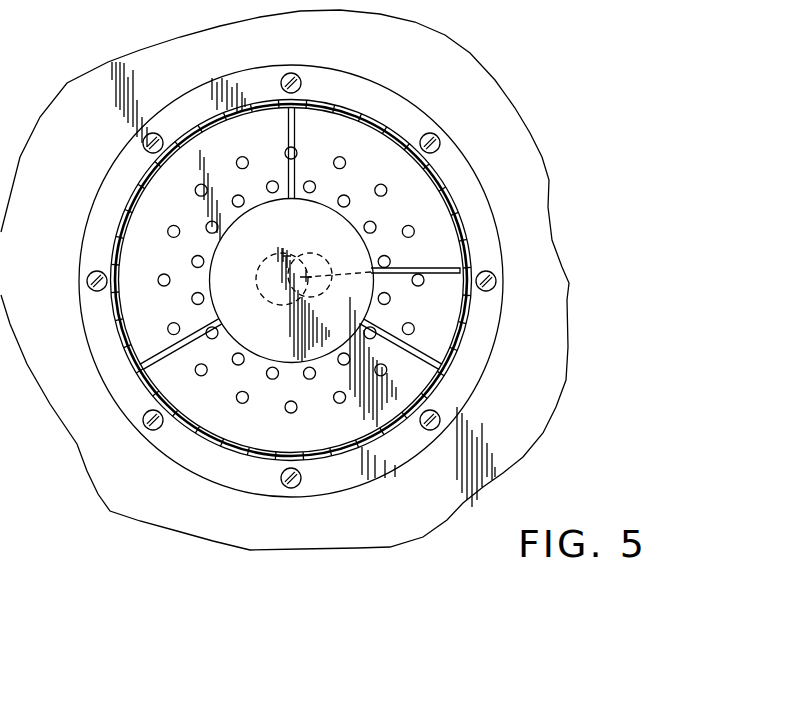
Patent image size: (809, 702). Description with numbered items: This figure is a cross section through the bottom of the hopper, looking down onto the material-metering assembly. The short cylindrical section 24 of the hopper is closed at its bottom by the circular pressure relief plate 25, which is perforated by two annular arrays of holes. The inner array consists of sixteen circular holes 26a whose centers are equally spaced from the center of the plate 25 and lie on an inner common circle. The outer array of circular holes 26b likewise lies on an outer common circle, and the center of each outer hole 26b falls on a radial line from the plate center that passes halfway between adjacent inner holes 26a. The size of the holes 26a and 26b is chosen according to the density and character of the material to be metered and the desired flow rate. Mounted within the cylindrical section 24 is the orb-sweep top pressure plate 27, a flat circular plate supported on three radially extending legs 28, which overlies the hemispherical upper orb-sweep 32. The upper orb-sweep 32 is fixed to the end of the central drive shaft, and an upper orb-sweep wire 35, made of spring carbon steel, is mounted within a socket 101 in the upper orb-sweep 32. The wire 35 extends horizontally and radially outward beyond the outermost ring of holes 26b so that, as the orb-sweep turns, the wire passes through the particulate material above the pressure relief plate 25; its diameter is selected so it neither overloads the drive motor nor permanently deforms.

The cylindrical section 24 is at (362, 116).
The pressure relief plate 25 is at (392, 150).
The inner holes 26a is at (385, 256).
The outer holes 26b is at (348, 139).
The orb-sweep top pressure plate 27 is at (288, 236).
The legs 28 is at (288, 124).
The upper orb-sweep 32 is at (268, 292).
The upper orb-sweep wire 35 is at (405, 268).
The socket 101 is at (309, 253).